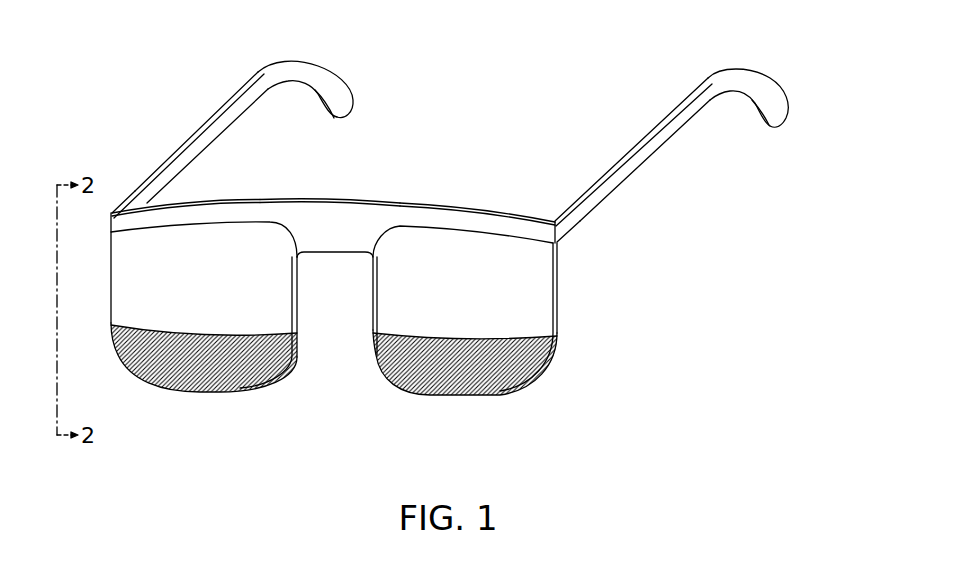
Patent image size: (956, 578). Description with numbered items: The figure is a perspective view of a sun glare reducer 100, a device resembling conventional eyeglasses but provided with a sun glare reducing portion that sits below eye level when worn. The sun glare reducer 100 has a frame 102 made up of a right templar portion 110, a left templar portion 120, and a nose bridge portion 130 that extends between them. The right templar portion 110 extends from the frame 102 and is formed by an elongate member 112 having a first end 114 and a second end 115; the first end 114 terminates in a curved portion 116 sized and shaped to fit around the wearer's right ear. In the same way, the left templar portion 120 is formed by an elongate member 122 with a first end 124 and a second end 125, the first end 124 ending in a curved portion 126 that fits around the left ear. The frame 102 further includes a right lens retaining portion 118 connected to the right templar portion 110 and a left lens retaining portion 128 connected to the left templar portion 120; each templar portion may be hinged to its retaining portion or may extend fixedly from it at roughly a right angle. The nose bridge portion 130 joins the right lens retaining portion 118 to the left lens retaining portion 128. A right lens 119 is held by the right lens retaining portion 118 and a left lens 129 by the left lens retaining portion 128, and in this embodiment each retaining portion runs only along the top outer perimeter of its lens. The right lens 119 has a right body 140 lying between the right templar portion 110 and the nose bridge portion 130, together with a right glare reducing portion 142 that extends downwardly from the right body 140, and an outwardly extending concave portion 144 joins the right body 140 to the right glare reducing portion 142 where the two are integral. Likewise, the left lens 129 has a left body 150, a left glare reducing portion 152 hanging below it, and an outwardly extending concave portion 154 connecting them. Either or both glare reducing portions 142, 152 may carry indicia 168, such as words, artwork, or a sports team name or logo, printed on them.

The sun glare reducer 100 is at (513, 58).
The frame 102 is at (345, 198).
The right templar portion 110 is at (217, 130).
The elongate member 112 is at (217, 110).
The first end 114 is at (333, 66).
The second end 115 is at (128, 195).
The curved portion 116 is at (318, 108).
The right lens retaining portion 118 is at (197, 207).
The right lens 119 is at (297, 288).
The left templar portion 120 is at (638, 147).
The elongate member 122 is at (657, 122).
The first end 124 is at (748, 72).
The second end 125 is at (579, 222).
The curved portion 126 is at (790, 115).
The left lens retaining portion 128 is at (470, 217).
The left lens 129 is at (540, 272).
The nose bridge portion 130 is at (323, 212).
The right body 140 is at (110, 280).
The right glare reducing portion 142 is at (260, 388).
The outwardly extending concave portion 144 is at (295, 328).
The left body 150 is at (558, 313).
The left glare reducing portion 152 is at (533, 387).
The outwardly extending concave portion 154 is at (562, 331).
The indicia 168 is at (187, 367).